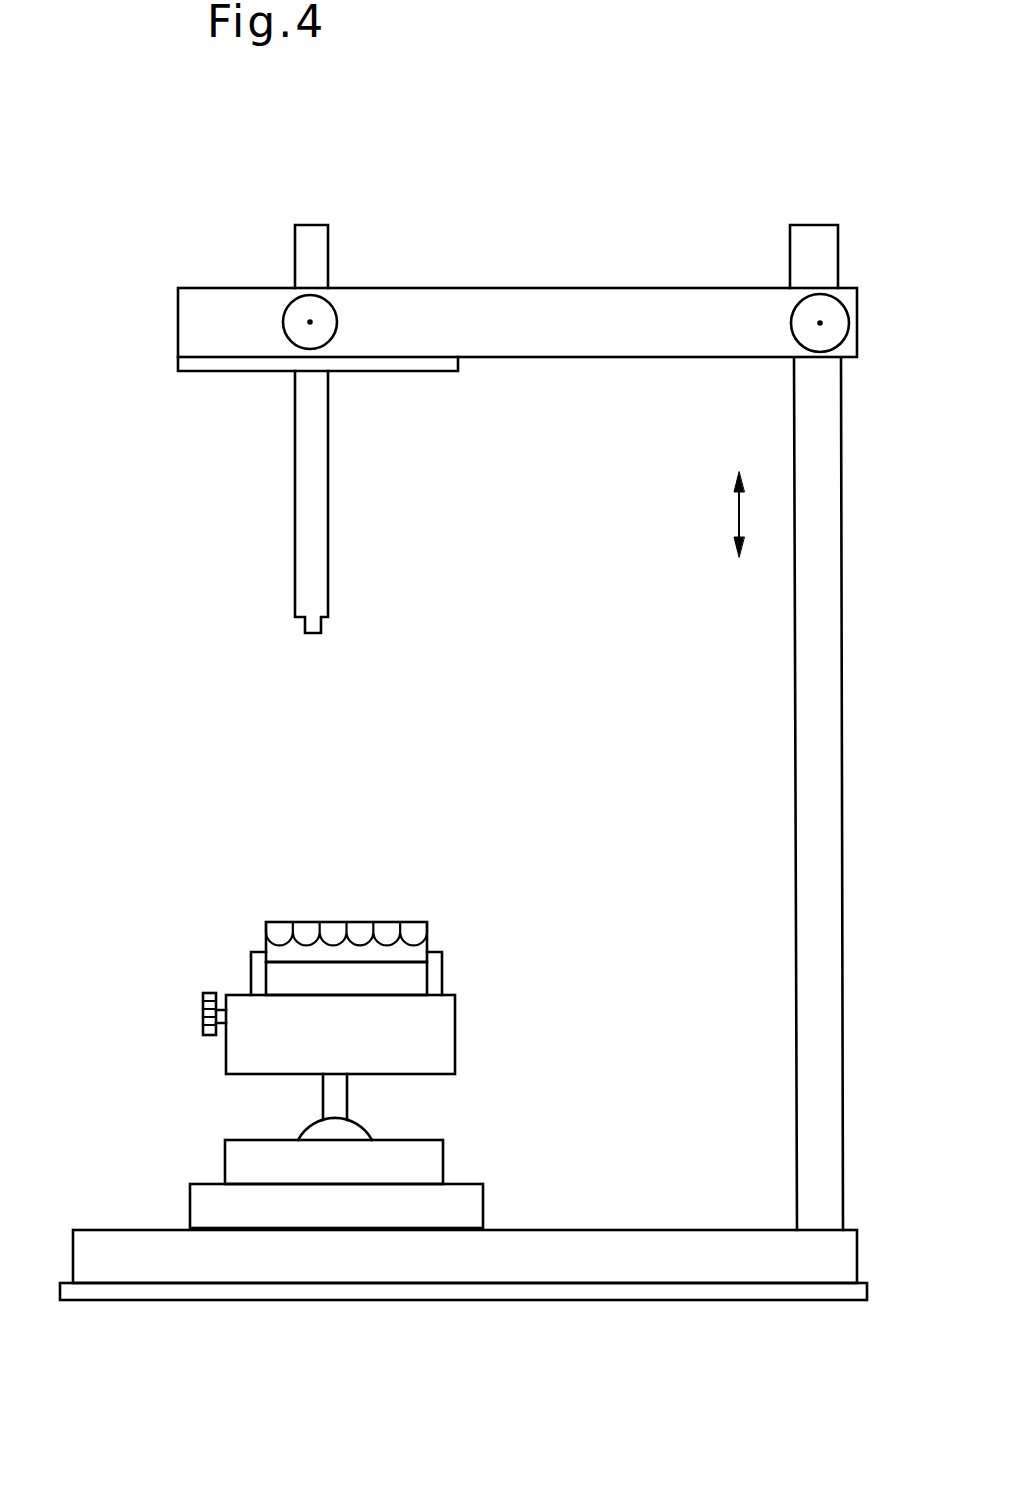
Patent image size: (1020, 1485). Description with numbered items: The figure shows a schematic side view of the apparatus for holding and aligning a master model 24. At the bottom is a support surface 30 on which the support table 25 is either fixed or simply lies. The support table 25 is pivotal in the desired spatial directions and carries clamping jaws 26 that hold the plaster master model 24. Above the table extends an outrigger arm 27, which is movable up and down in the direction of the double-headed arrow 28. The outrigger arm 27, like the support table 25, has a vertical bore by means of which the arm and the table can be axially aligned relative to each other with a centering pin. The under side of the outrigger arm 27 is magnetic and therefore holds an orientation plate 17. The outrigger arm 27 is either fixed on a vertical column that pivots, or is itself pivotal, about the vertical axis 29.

The orientation plate 17 is at (228, 362).
The master model 24 is at (297, 948).
The support table 25 is at (248, 1053).
The clamping jaws 26 is at (435, 960).
The outrigger arm 27 is at (228, 308).
The double-headed arrow 28 is at (739, 510).
The vertical axis 29 is at (810, 749).
The support surface 30 is at (690, 1268).